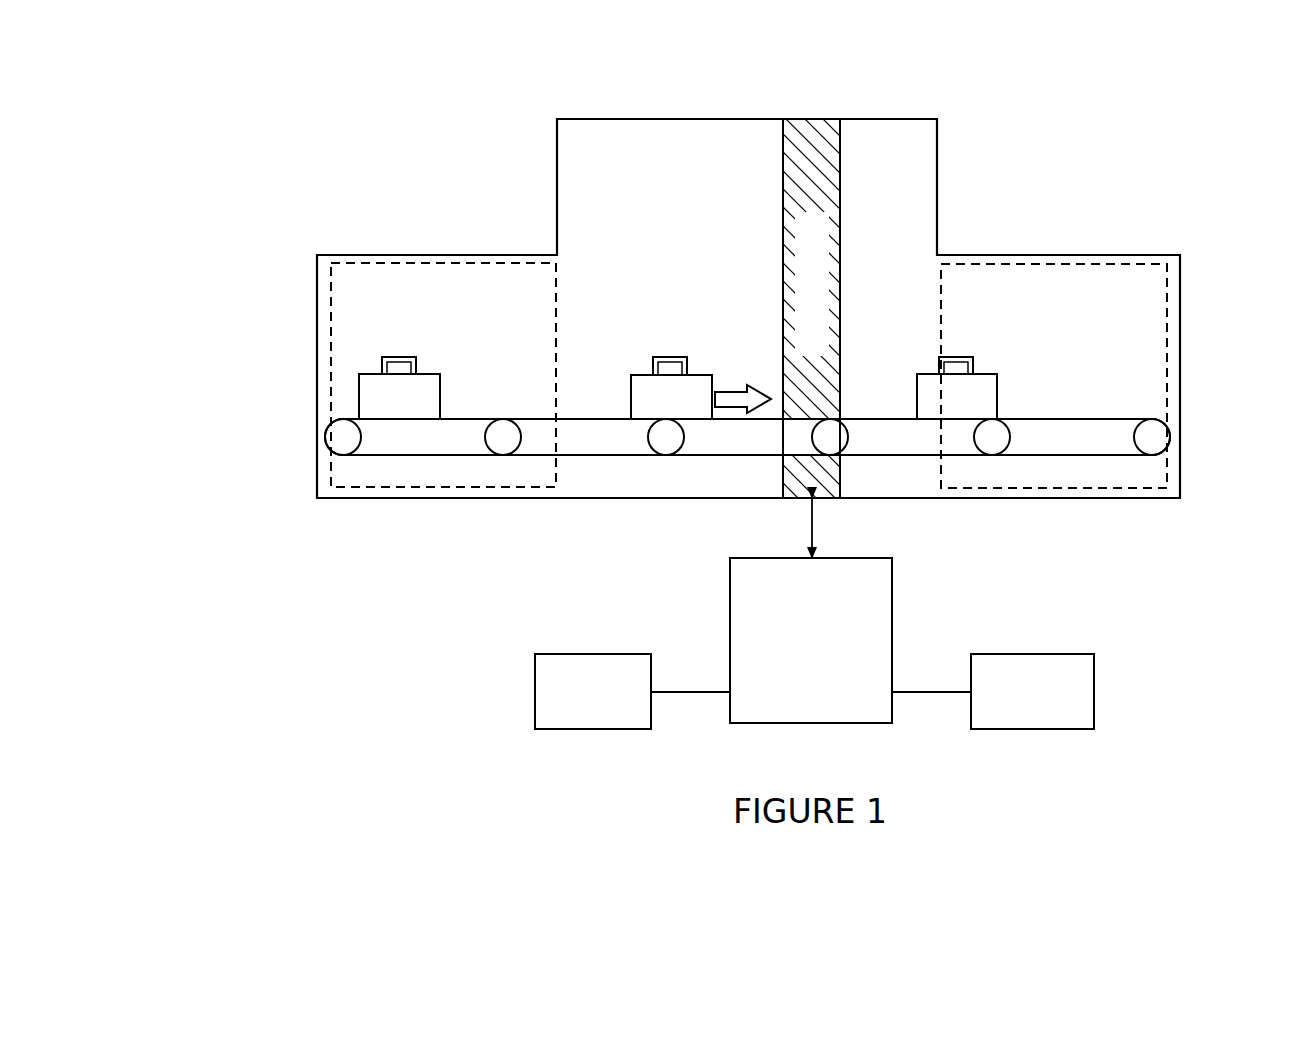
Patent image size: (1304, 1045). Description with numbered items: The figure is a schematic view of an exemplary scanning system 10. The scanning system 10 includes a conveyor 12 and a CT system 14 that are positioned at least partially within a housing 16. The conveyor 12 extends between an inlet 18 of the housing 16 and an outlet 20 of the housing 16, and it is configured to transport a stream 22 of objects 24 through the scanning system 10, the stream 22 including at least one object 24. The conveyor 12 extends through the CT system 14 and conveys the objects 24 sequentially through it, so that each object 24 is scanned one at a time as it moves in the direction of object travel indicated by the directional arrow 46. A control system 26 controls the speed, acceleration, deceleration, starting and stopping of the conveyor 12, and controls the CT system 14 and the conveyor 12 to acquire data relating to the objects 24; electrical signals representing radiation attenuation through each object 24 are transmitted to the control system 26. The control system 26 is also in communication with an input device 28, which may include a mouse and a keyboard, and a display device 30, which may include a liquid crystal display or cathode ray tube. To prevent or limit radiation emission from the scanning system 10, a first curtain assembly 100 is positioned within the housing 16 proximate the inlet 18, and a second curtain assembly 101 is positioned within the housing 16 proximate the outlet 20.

The scanning system 10 is at (412, 125).
The conveyor 12 is at (1078, 418).
The CT system 14 is at (840, 143).
The housing 16 is at (557, 150).
The inlet 18 is at (305, 410).
The outlet 20 is at (1185, 350).
The stream 22 is at (362, 361).
The object 24 is at (436, 374).
The control system 26 is at (854, 558).
The input device 28 is at (586, 654).
The display device 30 is at (1053, 654).
The directional arrow 46 is at (727, 389).
The first curtain assembly 100 is at (434, 262).
The second curtain assembly 101 is at (1066, 262).